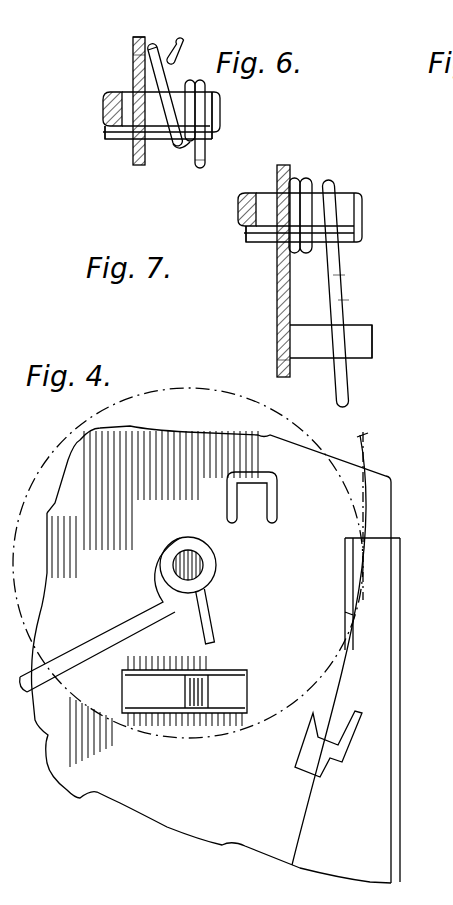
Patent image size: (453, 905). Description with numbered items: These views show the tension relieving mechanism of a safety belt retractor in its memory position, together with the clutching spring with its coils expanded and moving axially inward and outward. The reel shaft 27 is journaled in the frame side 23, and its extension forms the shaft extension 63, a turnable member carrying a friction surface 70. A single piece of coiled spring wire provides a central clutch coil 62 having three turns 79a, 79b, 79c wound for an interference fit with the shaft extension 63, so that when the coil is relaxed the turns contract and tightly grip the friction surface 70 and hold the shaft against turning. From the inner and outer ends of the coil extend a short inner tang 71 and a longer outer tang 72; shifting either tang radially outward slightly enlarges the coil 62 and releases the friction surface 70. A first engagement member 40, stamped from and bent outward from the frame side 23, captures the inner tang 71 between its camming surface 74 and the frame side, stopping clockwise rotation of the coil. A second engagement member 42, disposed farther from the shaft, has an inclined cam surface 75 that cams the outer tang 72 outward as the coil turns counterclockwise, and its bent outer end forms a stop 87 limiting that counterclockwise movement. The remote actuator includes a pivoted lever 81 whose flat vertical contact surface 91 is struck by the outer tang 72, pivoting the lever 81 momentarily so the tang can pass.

In FIG. 6, the frame side 23 is at (131, 64).
In FIG. 7, the frame side 23 is at (277, 328).
In FIG. 6, the reel shaft 27 is at (114, 140).
In FIG. 7, the reel shaft 27 is at (257, 243).
In FIG. 6, the first engagement member 40 is at (152, 48).
In FIG. 4, the first engagement member 40 is at (277, 505).
In FIG. 7, the second engagement member 42 is at (315, 347).
In FIG. 4, the second engagement member 42 is at (168, 722).
In FIG. 6, the clutch coil 62 is at (178, 44).
In FIG. 7, the clutch coil 62 is at (300, 254).
In FIG. 4, the clutch coil 62 is at (216, 560).
In FIG. 6, the shaft extension 63 is at (221, 110).
In FIG. 4, the shaft extension 63 is at (195, 537).
In FIG. 6, the friction surface 70 is at (220, 128).
In FIG. 7, the friction surface 70 is at (358, 213).
In FIG. 4, the friction surface 70 is at (182, 551).
In FIG. 6, the inner tang 71 is at (132, 52).
In FIG. 4, the inner tang 71 is at (213, 622).
In FIG. 6, the outer tang 72 is at (208, 165).
In FIG. 7, the outer tang 72 is at (343, 273).
In FIG. 4, the outer tang 72 is at (83, 648).
In FIG. 6, the camming surface 74 is at (139, 38).
In FIG. 7, the cam surface 75 is at (277, 362).
In FIG. 6, the coil turn 79a is at (196, 80).
In FIG. 7, the coil turn 79a is at (335, 180).
In FIG. 6, the coil turn 79b is at (183, 155).
In FIG. 7, the coil turn 79b is at (307, 176).
In FIG. 6, the coil turn 79c is at (156, 158).
In FIG. 7, the coil turn 79c is at (297, 176).
In FIG. 4, the pivoted lever 81 is at (378, 678).
In FIG. 7, the stop 87 is at (373, 333).
In FIG. 4, the contact surface 91 is at (343, 580).